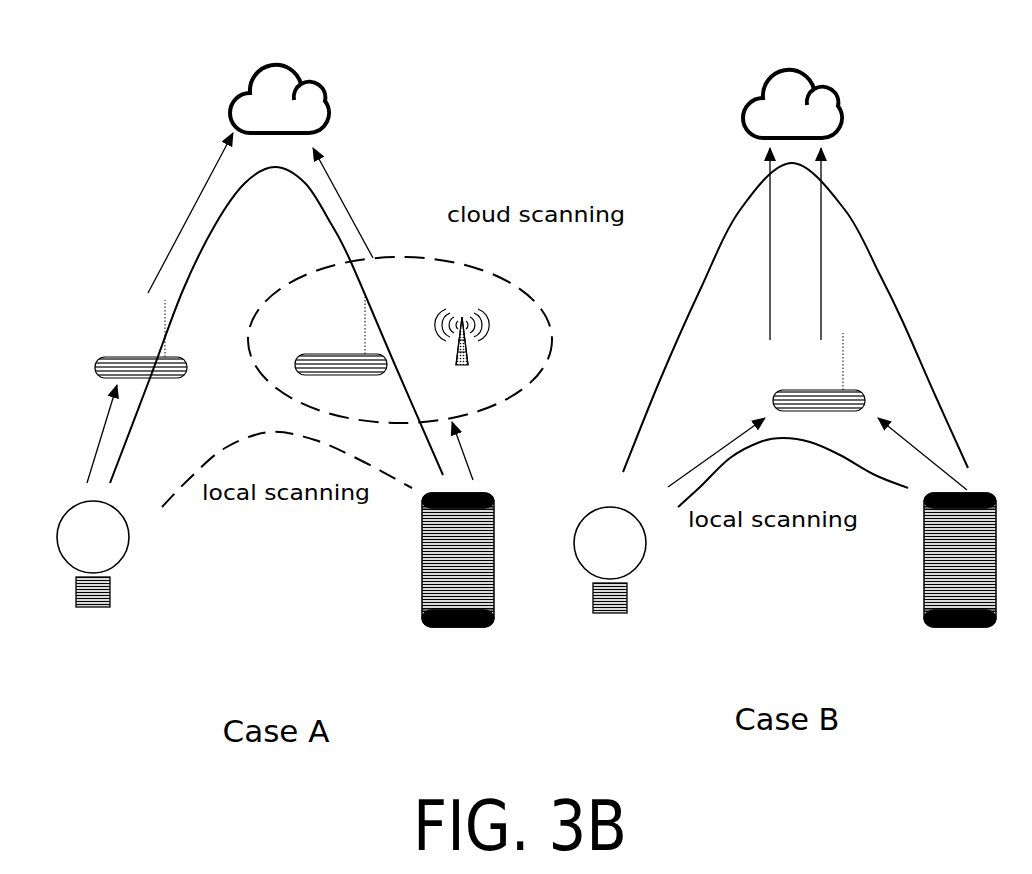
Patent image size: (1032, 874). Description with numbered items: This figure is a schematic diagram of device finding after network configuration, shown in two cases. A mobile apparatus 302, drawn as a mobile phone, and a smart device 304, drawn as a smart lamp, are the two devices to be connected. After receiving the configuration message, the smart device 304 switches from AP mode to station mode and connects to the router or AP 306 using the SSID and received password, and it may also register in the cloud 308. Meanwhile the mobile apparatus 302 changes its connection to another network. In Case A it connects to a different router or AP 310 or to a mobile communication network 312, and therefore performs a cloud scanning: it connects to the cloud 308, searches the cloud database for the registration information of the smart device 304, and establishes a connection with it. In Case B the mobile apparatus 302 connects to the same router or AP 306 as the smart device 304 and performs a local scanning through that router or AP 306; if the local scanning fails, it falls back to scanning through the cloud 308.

The mobile apparatus 302 is at (709, 585).
The smart device 304 is at (351, 583).
The router or AP 306 is at (478, 355).
The cloud 308 is at (536, 69).
The different router or AP 310 is at (335, 336).
The mobile communication network 312 is at (462, 354).